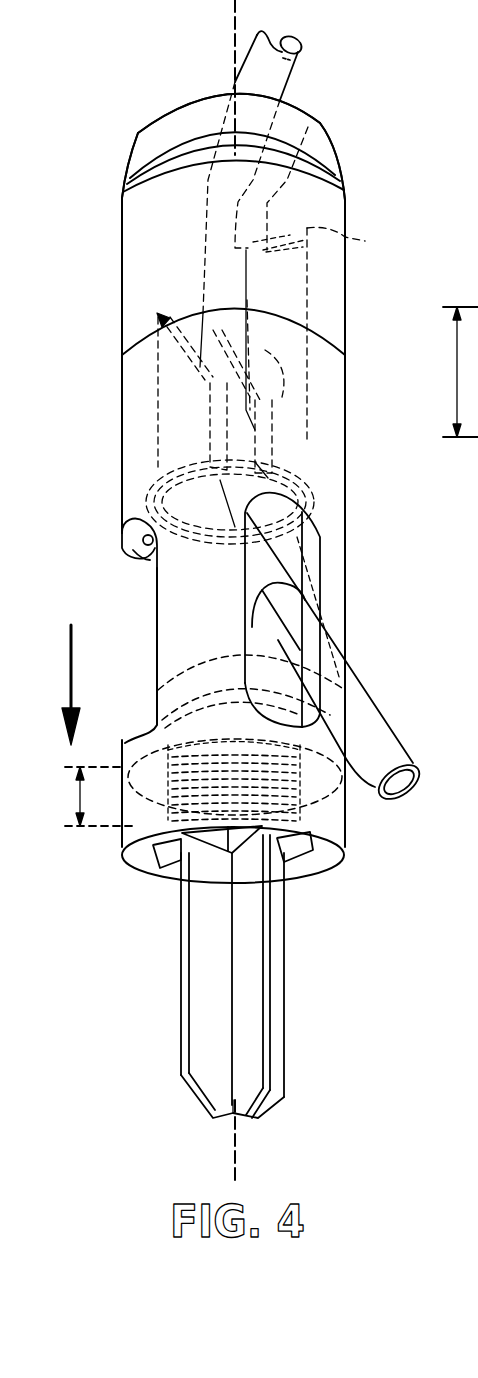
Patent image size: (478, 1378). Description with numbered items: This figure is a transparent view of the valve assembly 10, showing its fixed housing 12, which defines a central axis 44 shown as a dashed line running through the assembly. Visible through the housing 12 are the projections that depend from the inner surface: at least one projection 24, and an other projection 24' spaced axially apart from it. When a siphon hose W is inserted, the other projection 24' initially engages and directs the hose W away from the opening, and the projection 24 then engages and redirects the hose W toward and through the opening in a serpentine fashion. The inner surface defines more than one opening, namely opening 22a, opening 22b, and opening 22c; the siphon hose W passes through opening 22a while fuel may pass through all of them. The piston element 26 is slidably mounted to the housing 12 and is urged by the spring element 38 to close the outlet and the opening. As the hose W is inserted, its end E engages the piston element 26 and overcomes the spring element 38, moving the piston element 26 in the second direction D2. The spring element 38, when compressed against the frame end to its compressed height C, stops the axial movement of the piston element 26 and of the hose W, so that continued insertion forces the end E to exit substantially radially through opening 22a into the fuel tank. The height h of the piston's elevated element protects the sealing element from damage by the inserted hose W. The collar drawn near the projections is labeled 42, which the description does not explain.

The valve assembly 10 is at (128, 137).
The housing 12 is at (120, 267).
The projection 24 is at (178, 388).
The other projection 24' is at (333, 333).
The piston element 26 is at (165, 915).
The spring element 38 is at (350, 823).
The collar 42 is at (343, 486).
The central axis 44 is at (233, 53).
The opening 22a is at (320, 548).
The opening 22b is at (140, 565).
The opening 22c is at (315, 608).
The siphon hose W is at (343, 637).
The end of tube E is at (425, 793).
The height h is at (460, 372).
The second direction D2 is at (87, 685).
The compressed height C is at (78, 797).